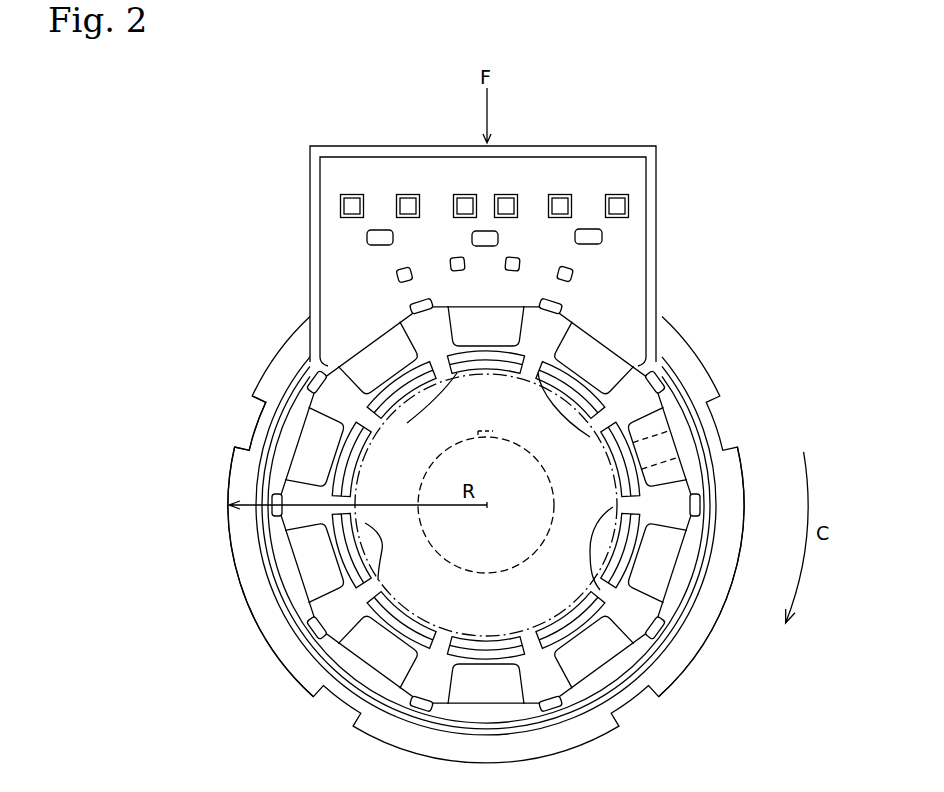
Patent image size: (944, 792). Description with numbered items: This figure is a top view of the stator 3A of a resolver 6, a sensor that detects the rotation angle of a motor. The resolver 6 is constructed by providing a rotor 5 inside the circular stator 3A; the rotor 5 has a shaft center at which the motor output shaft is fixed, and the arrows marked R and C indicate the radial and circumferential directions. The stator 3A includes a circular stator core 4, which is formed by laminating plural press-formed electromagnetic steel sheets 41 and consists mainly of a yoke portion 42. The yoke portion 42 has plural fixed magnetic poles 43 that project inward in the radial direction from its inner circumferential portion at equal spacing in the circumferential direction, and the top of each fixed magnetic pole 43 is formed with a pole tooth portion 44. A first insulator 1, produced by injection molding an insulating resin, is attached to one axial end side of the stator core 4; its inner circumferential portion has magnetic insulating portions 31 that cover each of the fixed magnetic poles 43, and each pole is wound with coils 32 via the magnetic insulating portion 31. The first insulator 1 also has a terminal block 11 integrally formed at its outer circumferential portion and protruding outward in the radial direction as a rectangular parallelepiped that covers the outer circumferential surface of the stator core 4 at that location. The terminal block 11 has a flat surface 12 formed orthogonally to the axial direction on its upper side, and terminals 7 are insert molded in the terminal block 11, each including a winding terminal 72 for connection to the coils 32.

The first insulator 1 is at (310, 657).
The stator 3A is at (256, 376).
The stator core 4 is at (228, 483).
The electromagnetic steel sheet 41 is at (730, 503).
The yoke portion 42 is at (233, 542).
The fixed magnetic pole 43 is at (650, 430).
The pole tooth portion 44 is at (390, 409).
The rotor 5 is at (640, 578).
The resolver 6 is at (226, 277).
The terminal 7 is at (405, 205).
The winding terminal 72 is at (506, 205).
The terminal block 11 is at (310, 203).
The flat surface 12 is at (625, 272).
The magnetic insulating portion 31 is at (593, 563).
The coil 32 is at (315, 552).